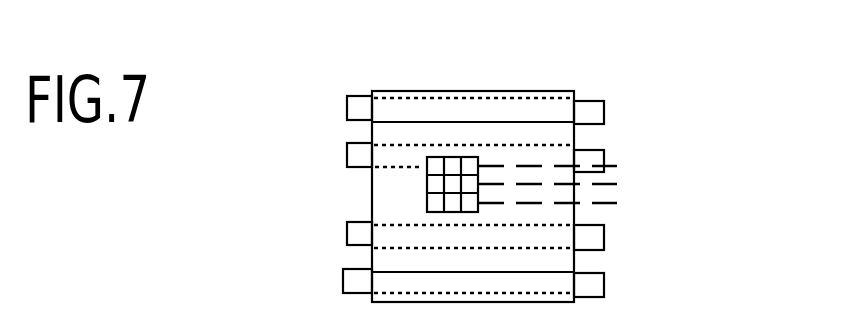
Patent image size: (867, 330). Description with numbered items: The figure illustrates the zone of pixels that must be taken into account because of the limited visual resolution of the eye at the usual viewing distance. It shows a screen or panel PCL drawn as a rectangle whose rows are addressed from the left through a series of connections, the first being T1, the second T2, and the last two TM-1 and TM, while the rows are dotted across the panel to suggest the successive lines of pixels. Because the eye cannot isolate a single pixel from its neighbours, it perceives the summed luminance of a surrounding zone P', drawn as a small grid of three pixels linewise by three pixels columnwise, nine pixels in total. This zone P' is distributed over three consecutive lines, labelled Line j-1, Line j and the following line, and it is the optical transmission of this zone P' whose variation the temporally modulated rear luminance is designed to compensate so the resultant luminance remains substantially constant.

The screen or panel PCL is at (493, 91).
The first transfer terminal T1 is at (340, 107).
The second transfer terminal T2 is at (340, 155).
The (M-1)th transfer terminal TM-1 is at (340, 232).
The Mth transfer terminal TM is at (336, 279).
The zone of pixels P' is at (443, 123).
The line Lj-1 Line j-1 is at (599, 168).
The line Lj Line j is at (587, 190).